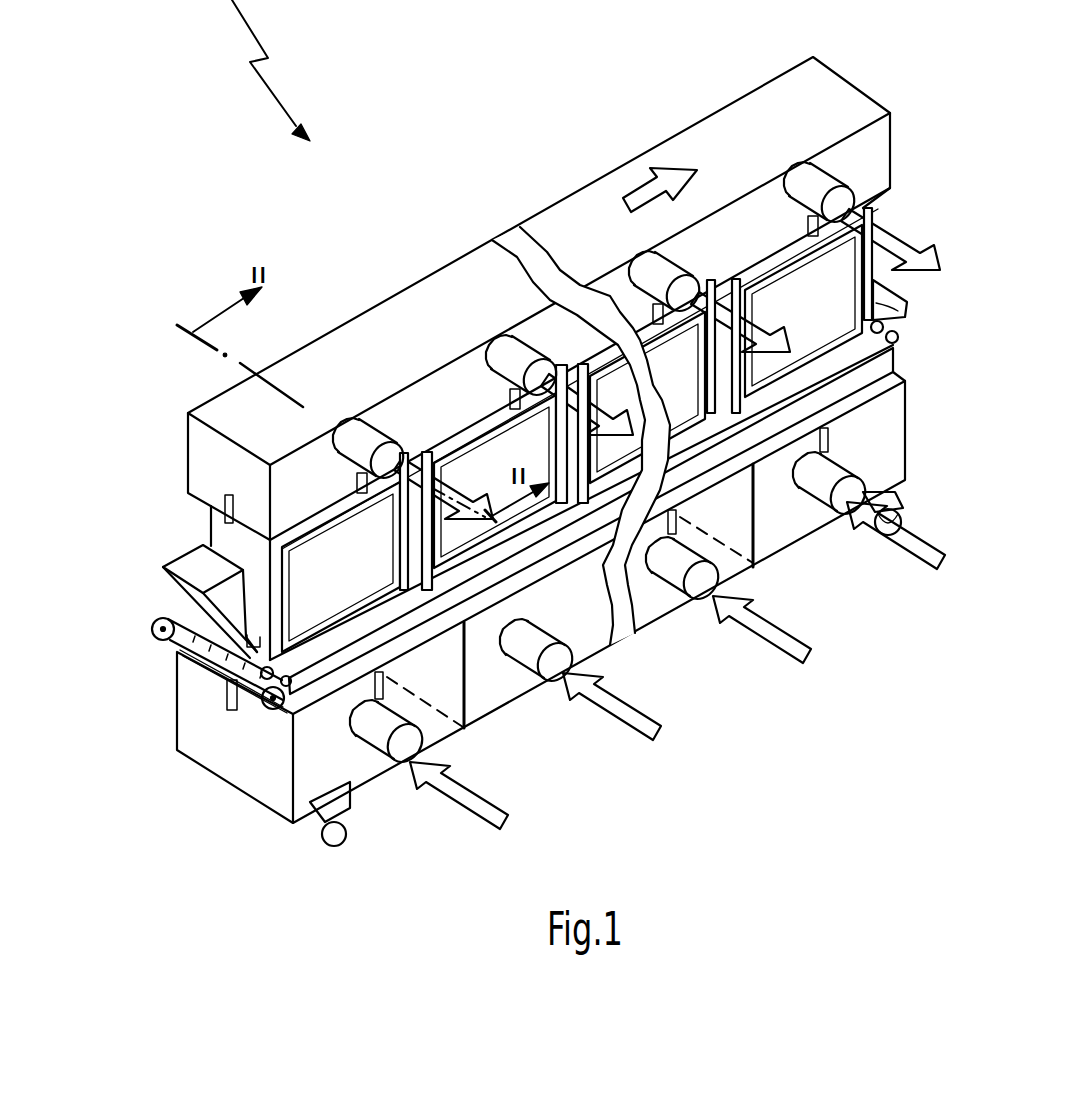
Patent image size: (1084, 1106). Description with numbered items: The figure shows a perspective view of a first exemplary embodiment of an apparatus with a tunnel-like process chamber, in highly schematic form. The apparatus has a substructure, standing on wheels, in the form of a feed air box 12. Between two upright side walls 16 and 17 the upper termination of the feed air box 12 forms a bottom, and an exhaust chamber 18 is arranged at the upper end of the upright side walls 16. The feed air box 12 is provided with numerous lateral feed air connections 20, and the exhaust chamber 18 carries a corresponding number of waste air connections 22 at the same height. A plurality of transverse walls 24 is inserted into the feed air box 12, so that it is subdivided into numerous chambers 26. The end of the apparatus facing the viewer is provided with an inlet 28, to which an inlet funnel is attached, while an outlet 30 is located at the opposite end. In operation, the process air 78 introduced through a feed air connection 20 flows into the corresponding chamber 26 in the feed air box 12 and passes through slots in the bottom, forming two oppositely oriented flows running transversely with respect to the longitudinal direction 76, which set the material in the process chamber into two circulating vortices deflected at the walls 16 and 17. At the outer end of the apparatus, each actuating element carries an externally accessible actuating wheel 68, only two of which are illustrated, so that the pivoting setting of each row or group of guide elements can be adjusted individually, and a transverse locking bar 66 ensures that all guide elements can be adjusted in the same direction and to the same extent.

The feed air box 12 is at (257, 777).
The upright side wall 16 is at (212, 530).
The upright side wall 17 is at (322, 600).
The exhaust chamber 18 is at (205, 450).
The feed air connection 20 is at (413, 763).
The waste air connection 22 is at (372, 443).
The transverse wall 24 is at (464, 687).
The chamber 26 is at (357, 770).
The inlet 28 is at (187, 600).
The outlet 30 is at (905, 308).
The transverse locking bar 66 is at (207, 663).
The actuating wheel 68 is at (152, 630).
The longitudinal direction 76 is at (648, 195).
The process air 78 is at (487, 800).